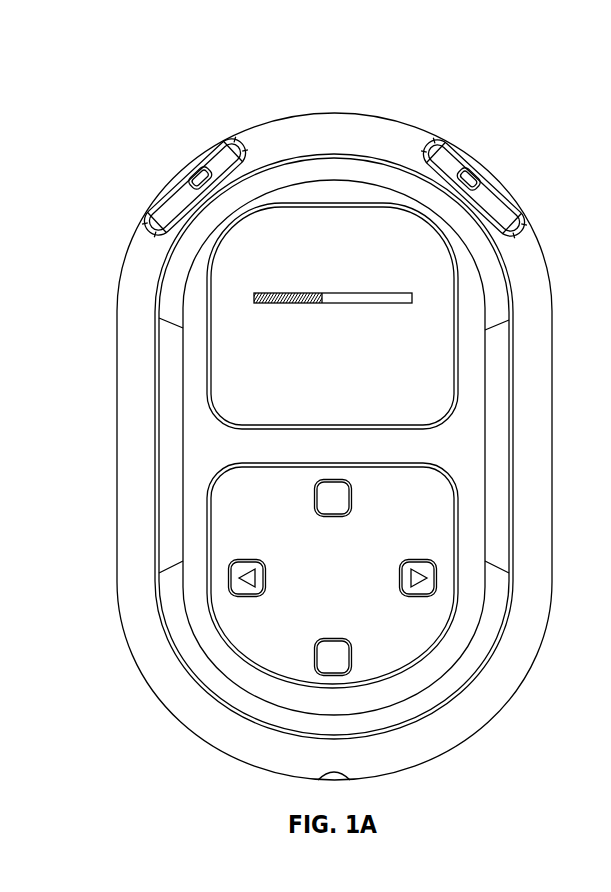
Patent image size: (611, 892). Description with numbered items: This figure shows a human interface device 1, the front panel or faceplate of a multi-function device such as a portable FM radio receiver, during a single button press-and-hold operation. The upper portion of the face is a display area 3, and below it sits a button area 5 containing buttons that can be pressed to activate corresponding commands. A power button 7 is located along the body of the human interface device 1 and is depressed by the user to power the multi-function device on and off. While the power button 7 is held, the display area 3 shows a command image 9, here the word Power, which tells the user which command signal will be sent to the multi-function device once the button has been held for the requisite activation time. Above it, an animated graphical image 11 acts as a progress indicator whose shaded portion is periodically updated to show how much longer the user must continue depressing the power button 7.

The human interface device 1 is at (140, 114).
The display area 3 is at (463, 368).
The button area 5 is at (216, 612).
The power button 7 is at (503, 182).
The command image 9 is at (417, 378).
The animated graphical image 11 is at (254, 297).